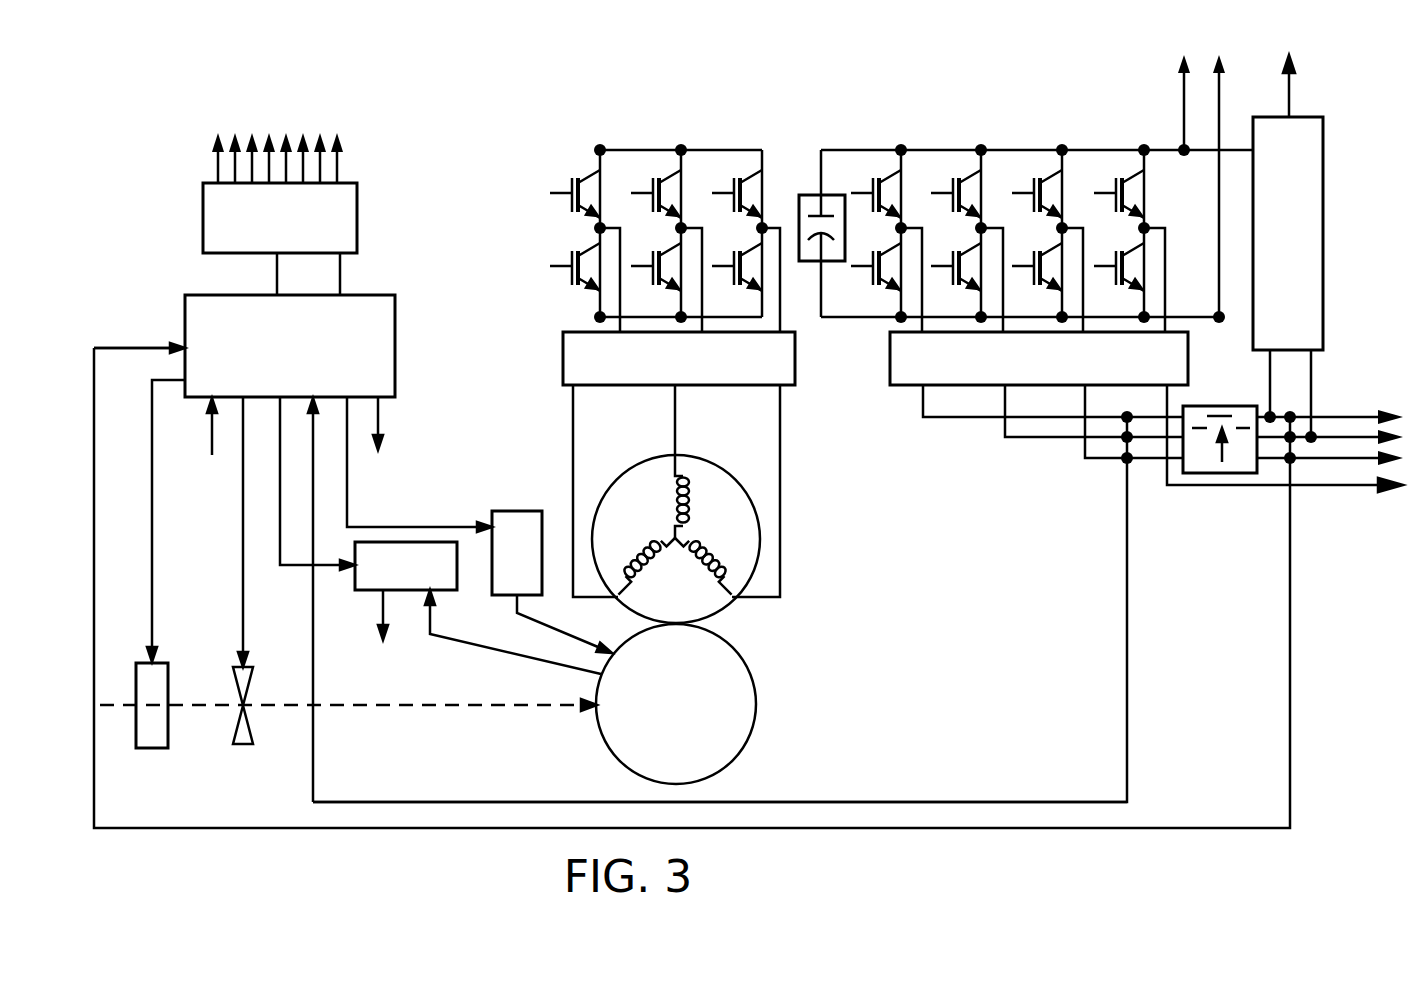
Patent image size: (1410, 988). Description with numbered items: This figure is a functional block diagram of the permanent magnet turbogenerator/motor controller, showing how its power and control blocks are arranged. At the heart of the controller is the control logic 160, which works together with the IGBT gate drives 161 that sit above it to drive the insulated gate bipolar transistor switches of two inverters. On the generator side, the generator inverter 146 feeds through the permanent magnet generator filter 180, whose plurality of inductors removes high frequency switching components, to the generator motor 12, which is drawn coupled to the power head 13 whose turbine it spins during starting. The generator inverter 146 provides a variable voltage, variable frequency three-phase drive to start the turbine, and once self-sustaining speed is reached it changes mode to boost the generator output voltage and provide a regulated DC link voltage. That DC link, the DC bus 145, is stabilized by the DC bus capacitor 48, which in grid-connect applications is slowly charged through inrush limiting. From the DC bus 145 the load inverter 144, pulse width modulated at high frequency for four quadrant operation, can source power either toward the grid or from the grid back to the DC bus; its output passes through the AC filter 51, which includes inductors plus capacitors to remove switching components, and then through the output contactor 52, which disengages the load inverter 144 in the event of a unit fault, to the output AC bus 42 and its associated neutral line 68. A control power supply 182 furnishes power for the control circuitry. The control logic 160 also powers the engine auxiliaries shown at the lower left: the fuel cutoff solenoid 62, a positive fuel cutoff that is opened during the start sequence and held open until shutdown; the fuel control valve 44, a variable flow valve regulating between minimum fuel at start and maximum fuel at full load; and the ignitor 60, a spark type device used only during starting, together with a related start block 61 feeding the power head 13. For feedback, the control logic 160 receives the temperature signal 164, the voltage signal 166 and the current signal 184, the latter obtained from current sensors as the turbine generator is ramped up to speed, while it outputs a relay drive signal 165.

The generator motor 12 is at (757, 527).
The power head 13 is at (756, 688).
The output AC bus 42 is at (1330, 458).
The fuel control valve 44 is at (252, 672).
The DC bus capacitor 48 is at (825, 262).
The AC filter 51 is at (1026, 372).
The output contactor 52 is at (1207, 406).
The ignitor 60 is at (503, 567).
The starter controller 61 is at (392, 582).
The fuel cutoff solenoid 62 is at (168, 672).
The neutral output line 68 is at (1300, 487).
The load inverter 144 is at (998, 145).
The DC bus 145 is at (1218, 117).
The generator inverter 146 is at (698, 145).
The control logic 160 is at (270, 362).
The IGBT gate drives 161 is at (257, 235).
The temperature signal 164 is at (212, 455).
The relay drive signal 165 is at (381, 414).
The voltage signal 166 is at (103, 338).
The permanent magnet generator filter 180 is at (655, 372).
The control power supply 182 is at (1268, 247).
The current signal 184 is at (817, 800).